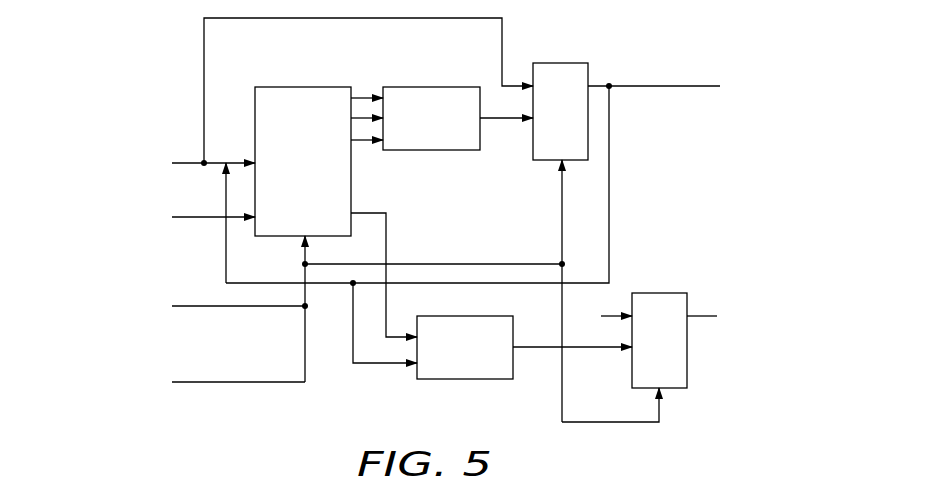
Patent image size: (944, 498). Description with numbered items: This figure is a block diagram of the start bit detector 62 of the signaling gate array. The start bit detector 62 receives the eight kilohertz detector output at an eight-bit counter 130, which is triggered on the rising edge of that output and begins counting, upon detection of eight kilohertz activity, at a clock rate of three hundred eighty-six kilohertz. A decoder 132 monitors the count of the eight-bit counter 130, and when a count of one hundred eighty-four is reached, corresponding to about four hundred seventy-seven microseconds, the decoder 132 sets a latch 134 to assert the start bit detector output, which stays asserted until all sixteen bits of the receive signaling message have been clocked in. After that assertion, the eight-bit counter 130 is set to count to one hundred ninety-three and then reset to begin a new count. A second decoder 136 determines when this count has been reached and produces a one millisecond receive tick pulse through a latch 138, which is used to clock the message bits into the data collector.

The start bit detector 62 is at (117, 59).
The 8-bit counter 130 is at (302, 87).
The decoder 132 is at (432, 87).
The latch 134 is at (557, 63).
The decoder 136 is at (460, 381).
The latch 138 is at (657, 293).